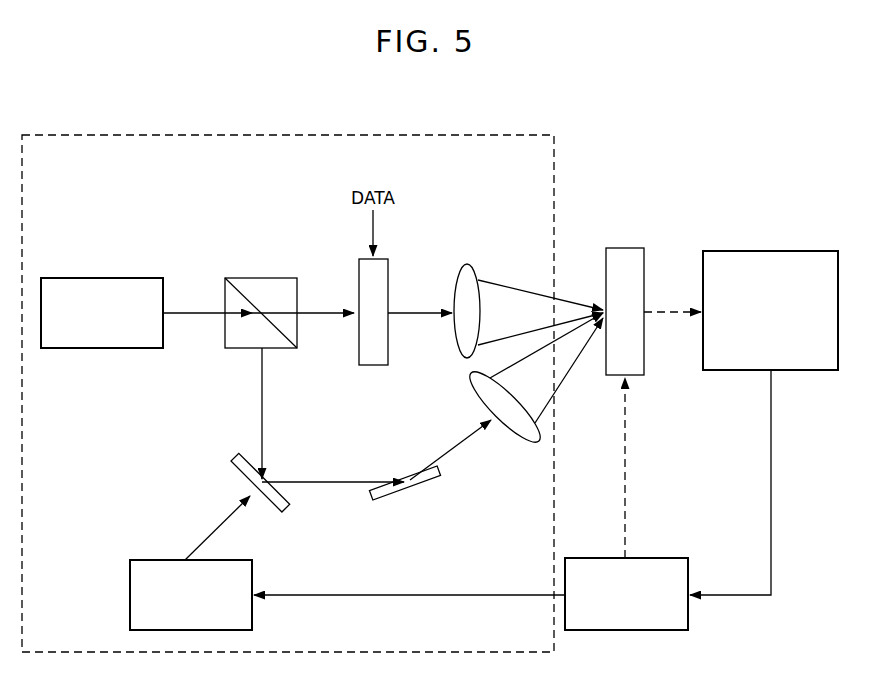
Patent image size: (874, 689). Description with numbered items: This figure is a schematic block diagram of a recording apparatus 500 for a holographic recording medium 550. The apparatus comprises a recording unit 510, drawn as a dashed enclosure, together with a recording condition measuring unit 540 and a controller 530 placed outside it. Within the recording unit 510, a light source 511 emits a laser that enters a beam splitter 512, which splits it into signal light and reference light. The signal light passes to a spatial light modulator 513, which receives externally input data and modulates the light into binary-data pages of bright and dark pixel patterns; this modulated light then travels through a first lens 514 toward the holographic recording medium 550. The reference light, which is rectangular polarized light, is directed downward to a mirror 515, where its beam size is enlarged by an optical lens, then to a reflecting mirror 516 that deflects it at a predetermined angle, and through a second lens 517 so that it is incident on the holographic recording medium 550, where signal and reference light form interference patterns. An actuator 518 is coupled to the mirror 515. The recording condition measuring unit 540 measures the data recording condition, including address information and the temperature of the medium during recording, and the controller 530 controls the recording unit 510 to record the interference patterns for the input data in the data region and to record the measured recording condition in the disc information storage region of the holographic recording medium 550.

The recording apparatus 500 is at (606, 114).
The recording unit 510 is at (288, 393).
The light source 511 is at (105, 278).
The beam splitter 512 is at (262, 278).
The spatial light modulator 513 is at (373, 365).
The first lens 514 is at (467, 264).
The mirror 515 is at (286, 512).
The reflecting mirror 516 is at (408, 490).
The second lens 517 is at (523, 443).
The actuator 518 is at (203, 560).
The controller 530 is at (638, 558).
The recording condition measuring unit 540 is at (790, 251).
The holographic recording medium 550 is at (625, 248).